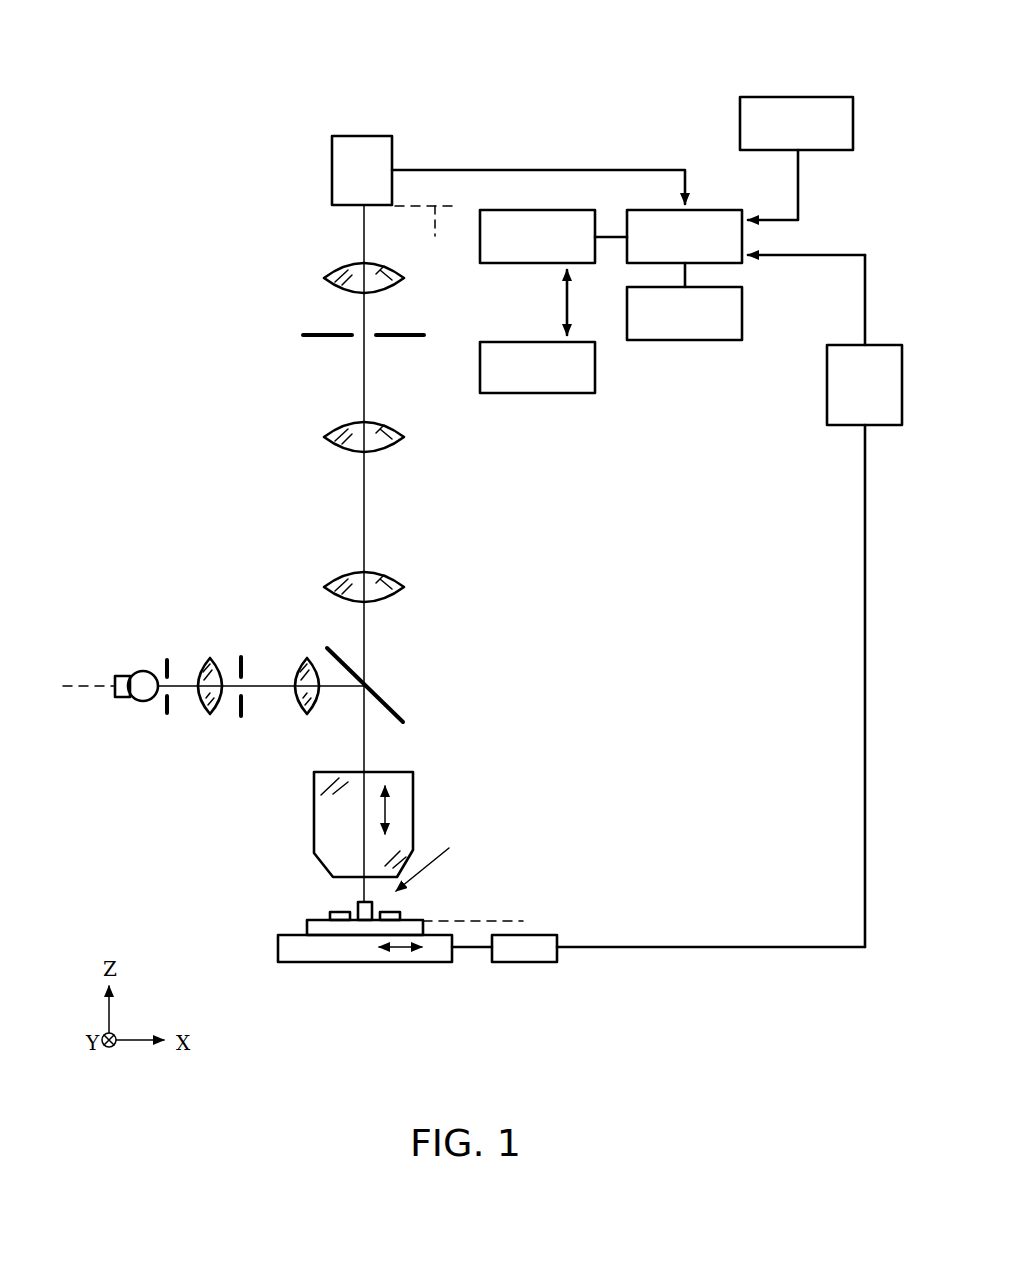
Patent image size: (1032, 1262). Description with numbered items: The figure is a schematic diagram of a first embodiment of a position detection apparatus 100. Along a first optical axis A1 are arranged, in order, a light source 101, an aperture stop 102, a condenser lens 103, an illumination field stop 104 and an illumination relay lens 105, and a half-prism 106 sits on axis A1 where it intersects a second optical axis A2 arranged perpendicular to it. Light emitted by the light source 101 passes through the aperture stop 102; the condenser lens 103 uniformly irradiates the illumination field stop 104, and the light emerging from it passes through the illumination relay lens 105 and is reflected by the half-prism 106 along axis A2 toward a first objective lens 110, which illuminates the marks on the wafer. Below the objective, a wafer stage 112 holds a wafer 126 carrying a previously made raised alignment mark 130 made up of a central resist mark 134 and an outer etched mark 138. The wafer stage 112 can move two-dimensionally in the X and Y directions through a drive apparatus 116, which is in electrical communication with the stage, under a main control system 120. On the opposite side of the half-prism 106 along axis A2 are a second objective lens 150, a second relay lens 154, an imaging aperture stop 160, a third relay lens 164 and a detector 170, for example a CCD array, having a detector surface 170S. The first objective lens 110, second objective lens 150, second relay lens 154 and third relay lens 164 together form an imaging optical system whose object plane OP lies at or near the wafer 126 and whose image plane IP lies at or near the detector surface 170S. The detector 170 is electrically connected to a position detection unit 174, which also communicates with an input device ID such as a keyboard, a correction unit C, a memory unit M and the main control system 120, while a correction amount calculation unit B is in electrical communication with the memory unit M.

The position detection apparatus 100 is at (304, 74).
The light source 101 is at (134, 675).
The aperture stop 102 is at (166, 712).
The condenser lens 103 is at (205, 660).
The illumination field stop 104 is at (240, 712).
The illumination relay lens 105 is at (298, 671).
The half-prism 106 is at (398, 717).
The first objective lens 110 is at (413, 797).
The wafer stage 112 is at (278, 950).
The drive apparatus 116 is at (523, 963).
The main control system 120 is at (827, 384).
The wafer 126 is at (307, 928).
The raised alignment mark 130 is at (441, 866).
The central resist mark 134 is at (357, 908).
The outer etched mark 138 is at (388, 911).
The second objective lens 150 is at (341, 580).
The second relay lens 154 is at (338, 430).
The imaging aperture stop 160 is at (306, 333).
The third relay lens 164 is at (326, 279).
The detector 170 is at (332, 162).
The detector surface 170S is at (350, 206).
The position detection unit 174 is at (708, 210).
The input device ID is at (780, 97).
The image plane IP is at (436, 236).
The memory unit M is at (500, 263).
The correction amount calculation unit B is at (506, 393).
The correction unit C is at (672, 340).
The object plane OP is at (503, 918).
The first optical axis A1 is at (84, 680).
The second optical axis A2 is at (366, 636).